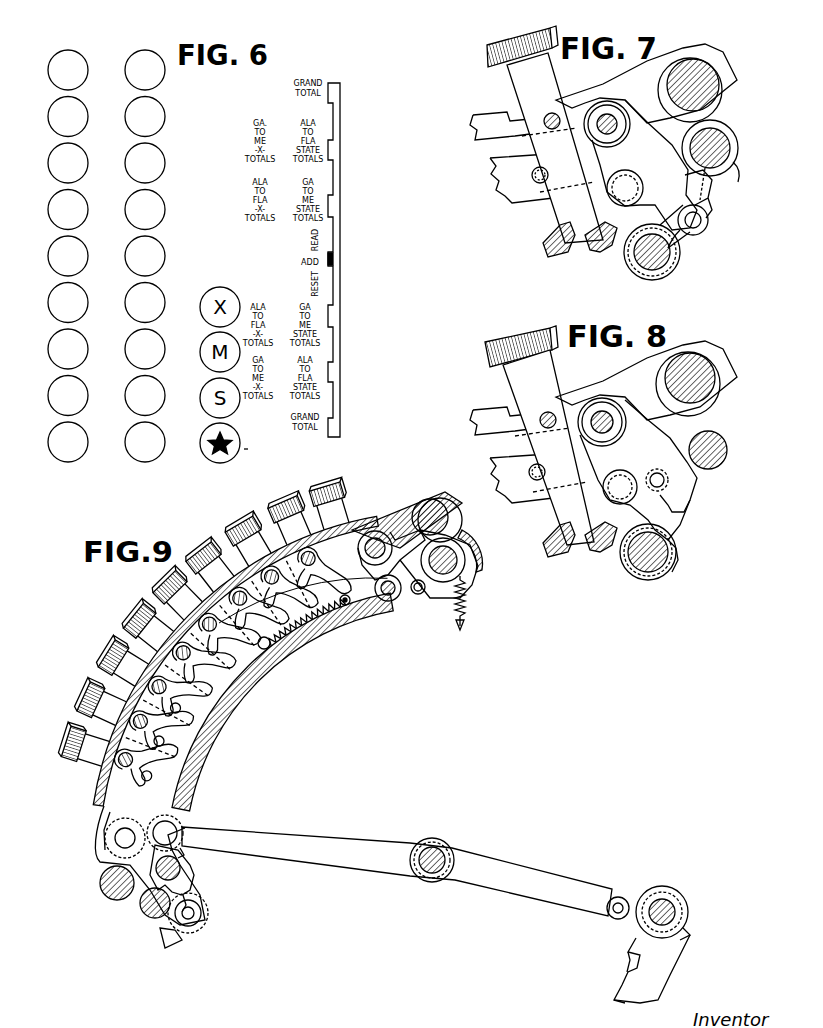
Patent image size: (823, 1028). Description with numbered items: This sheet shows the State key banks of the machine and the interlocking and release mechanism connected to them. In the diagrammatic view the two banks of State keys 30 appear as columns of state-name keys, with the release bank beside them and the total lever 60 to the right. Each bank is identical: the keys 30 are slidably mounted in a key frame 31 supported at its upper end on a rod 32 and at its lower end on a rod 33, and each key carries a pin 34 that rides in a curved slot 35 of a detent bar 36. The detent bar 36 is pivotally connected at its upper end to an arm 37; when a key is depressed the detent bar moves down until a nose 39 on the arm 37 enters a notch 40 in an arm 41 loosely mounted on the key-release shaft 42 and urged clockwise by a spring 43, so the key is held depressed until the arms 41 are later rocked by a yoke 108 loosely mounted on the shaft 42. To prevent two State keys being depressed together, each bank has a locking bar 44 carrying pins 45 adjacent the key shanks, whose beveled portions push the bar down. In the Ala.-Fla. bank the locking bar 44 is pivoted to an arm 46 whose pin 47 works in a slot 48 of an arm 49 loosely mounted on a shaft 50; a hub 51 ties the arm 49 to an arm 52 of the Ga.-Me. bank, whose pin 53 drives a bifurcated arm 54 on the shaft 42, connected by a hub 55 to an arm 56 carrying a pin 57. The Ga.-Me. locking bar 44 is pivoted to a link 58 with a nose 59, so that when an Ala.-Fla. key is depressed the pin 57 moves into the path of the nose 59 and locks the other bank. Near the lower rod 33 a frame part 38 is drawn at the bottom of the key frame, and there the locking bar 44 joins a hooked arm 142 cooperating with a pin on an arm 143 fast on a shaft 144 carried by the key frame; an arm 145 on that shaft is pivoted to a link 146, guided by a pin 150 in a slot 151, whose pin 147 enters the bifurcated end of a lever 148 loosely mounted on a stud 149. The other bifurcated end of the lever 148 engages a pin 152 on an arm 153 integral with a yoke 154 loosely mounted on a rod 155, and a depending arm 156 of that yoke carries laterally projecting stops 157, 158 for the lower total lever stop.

In FIG. 6, the State keys 30 is at (134, 52).
In FIG. 7, the State keys 30 is at (520, 40).
In FIG. 8, the State keys 30 is at (500, 342).
In FIG. 9, the State keys 30 is at (268, 504).
In FIG. 9, the key frame 31 is at (378, 515).
In FIG. 7, the rod 32 is at (690, 75).
In FIG. 8, the rod 32 is at (693, 372).
In FIG. 9, the rod 32 is at (432, 500).
In FIG. 9, the rod 33 is at (108, 897).
In FIG. 8, the pin 34 is at (553, 412).
In FIG. 9, the pin 34 is at (372, 530).
In FIG. 9, the curved slot 35 is at (335, 578).
In FIG. 9, the detent bar 36 is at (240, 668).
In FIG. 9, the arm 37 is at (352, 612).
In FIG. 9, the frame 38 is at (98, 866).
In FIG. 9, the nose 39 is at (392, 548).
In FIG. 9, the notch 40 is at (416, 596).
In FIG. 9, the arm 41 is at (430, 590).
In FIG. 7, the key-release shaft 42 is at (728, 140).
In FIG. 8, the key-release shaft 42 is at (722, 440).
In FIG. 9, the key-release shaft 42 is at (455, 543).
In FIG. 9, the spring 43 is at (468, 604).
In FIG. 7, the locking bar 44 is at (520, 198).
In FIG. 8, the locking bar 44 is at (522, 500).
In FIG. 9, the locking bar 44 is at (168, 753).
In FIG. 7, the pins 45 is at (532, 174).
In FIG. 8, the pins 45 is at (528, 472).
In FIG. 9, the pins 45 is at (188, 802).
In FIG. 8, the arm 46 is at (650, 445).
In FIG. 8, the pin 47 is at (655, 474).
In FIG. 8, the slot 48 is at (685, 510).
In FIG. 8, the arm 49 is at (688, 530).
In FIG. 7, the shaft 50 is at (642, 265).
In FIG. 8, the shaft 50 is at (652, 578).
In FIG. 7, the hub 51 is at (652, 278).
In FIG. 8, the hub 51 is at (630, 570).
In FIG. 7, the arm 52 is at (682, 240).
In FIG. 7, the pin 53 is at (715, 194).
In FIG. 7, the bifurcated arm 54 is at (718, 204).
In FIG. 7, the hub 55 is at (740, 150).
In FIG. 7, the arm 56 is at (710, 221).
In FIG. 7, the pin 57 is at (702, 228).
In FIG. 7, the link 58 is at (652, 140).
In FIG. 7, the nose 59 is at (720, 180).
In FIG. 6, the total lever 60 is at (338, 264).
In FIG. 9, the yoke 108 is at (484, 560).
In FIG. 9, the hooked arm 142 is at (198, 872).
In FIG. 9, the arm 143 is at (172, 900).
In FIG. 9, the shaft 144 is at (202, 922).
In FIG. 9, the arm 145 is at (180, 935).
In FIG. 9, the link 146 is at (196, 890).
In FIG. 9, the pin 147 is at (163, 830).
In FIG. 9, the lever 148 is at (335, 840).
In FIG. 9, the stud 149 is at (440, 850).
In FIG. 9, the pin 150 is at (180, 866).
In FIG. 9, the slot 151 is at (188, 850).
In FIG. 9, the pin 152 is at (621, 897).
In FIG. 9, the arm 153 is at (638, 895).
In FIG. 9, the yoke 154 is at (688, 935).
In FIG. 9, the rod 155 is at (676, 908).
In FIG. 9, the arm 156 is at (655, 970).
In FIG. 9, the stop 157 is at (620, 1005).
In FIG. 9, the stop 158 is at (628, 960).